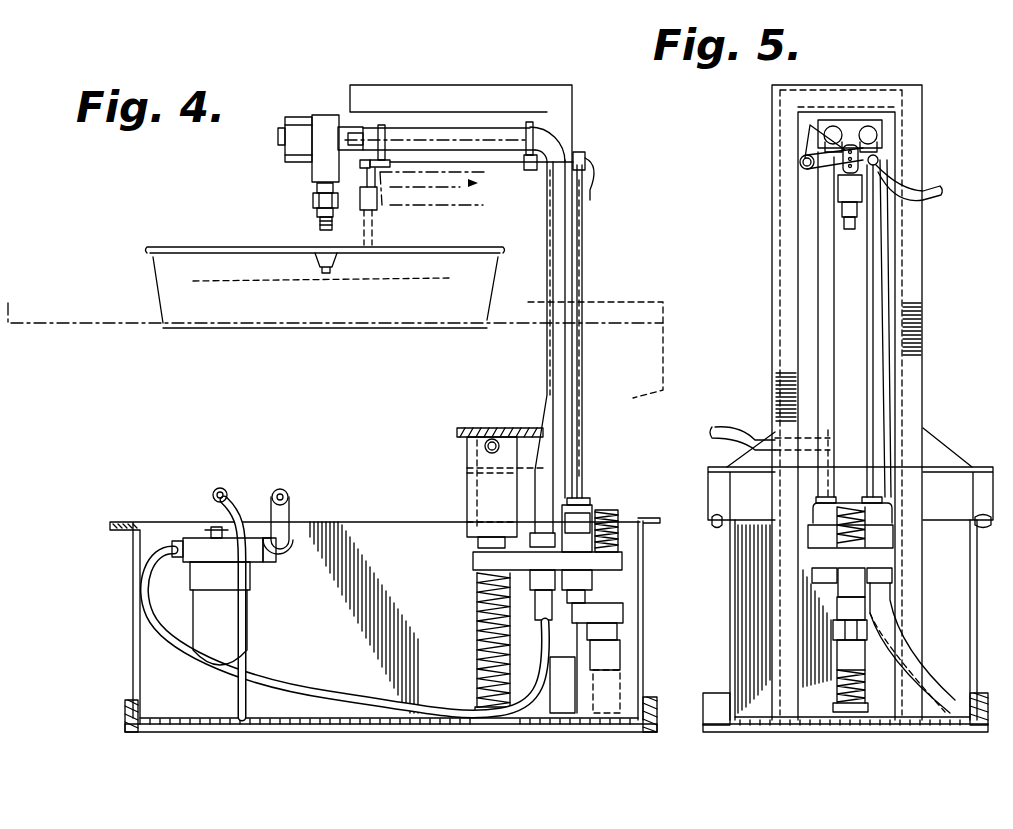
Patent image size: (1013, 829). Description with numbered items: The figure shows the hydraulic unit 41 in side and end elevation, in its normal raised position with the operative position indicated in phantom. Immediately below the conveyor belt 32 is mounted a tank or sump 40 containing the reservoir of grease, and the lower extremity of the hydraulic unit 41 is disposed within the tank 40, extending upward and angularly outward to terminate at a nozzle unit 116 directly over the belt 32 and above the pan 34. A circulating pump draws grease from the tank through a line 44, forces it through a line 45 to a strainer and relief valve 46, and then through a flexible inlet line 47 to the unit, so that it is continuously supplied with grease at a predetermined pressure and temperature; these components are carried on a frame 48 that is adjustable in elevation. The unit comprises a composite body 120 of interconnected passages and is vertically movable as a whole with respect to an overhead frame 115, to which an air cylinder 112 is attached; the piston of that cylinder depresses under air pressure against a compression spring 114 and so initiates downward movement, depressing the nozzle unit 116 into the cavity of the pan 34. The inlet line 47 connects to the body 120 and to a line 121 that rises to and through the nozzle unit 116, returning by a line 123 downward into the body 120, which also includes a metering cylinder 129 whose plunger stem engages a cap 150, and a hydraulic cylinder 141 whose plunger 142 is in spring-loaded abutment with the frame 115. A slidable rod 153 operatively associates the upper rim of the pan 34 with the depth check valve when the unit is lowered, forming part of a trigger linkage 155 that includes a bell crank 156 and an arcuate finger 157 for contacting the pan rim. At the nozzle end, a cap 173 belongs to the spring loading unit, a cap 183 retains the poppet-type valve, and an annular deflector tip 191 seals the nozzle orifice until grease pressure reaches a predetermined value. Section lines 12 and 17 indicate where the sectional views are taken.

In FIG. 4, the section line 12- 12 is at (477, 454).
In FIG. 4, the section line 17- 17 is at (285, 140).
In FIG. 4, the conveyor belt 32 is at (282, 330).
In FIG. 4, the pan 34 is at (203, 215).
In FIG. 4, the tank or sump 40 is at (133, 632).
In FIG. 5, the tank or sump 40 is at (732, 640).
In FIG. 4, the hydraulic unit 41 is at (632, 549).
In FIG. 4, the line 44 is at (213, 495).
In FIG. 4, the line 45 is at (287, 512).
In FIG. 4, the strainer and relief valve 46 is at (247, 620).
In FIG. 4, the flexible inlet line 47 is at (327, 690).
In FIG. 5, the flexible inlet line 47 is at (890, 652).
In FIG. 4, the frame 48 is at (123, 703).
In FIG. 4, the air cylinder 112 is at (465, 505).
In FIG. 4, the compression spring 114 is at (483, 670).
In FIG. 5, the compression spring 114 is at (837, 690).
In FIG. 4, the overhead frame 115 is at (573, 134).
In FIG. 5, the overhead frame 115 is at (917, 248).
In FIG. 4, the nozzle unit 116 is at (326, 118).
In FIG. 4, the composite body 120 is at (618, 566).
In FIG. 5, the composite body 120 is at (863, 558).
In FIG. 4, the line 121 is at (552, 380).
In FIG. 5, the line 121 is at (890, 427).
In FIG. 5, the line 123 is at (818, 383).
In FIG. 4, the metering cylinder 129 is at (623, 616).
In FIG. 4, the hydraulic cylinder 141 is at (482, 640).
In FIG. 4, the plunger 142 is at (480, 687).
In FIG. 5, the cap 150 is at (860, 653).
In FIG. 4, the slidable rod 153 is at (583, 278).
In FIG. 5, the slidable rod 153 is at (877, 308).
In FIG. 4, the trigger linkage 155 is at (478, 183).
In FIG. 5, the trigger linkage 155 is at (785, 167).
In FIG. 4, the bell crank 156 is at (338, 165).
In FIG. 5, the bell crank 156 is at (815, 168).
In FIG. 4, the arcuate finger 157 is at (370, 212).
In FIG. 5, the arcuate finger 157 is at (940, 188).
In FIG. 4, the cap 173 is at (282, 157).
In FIG. 4, the cap 183 is at (313, 202).
In FIG. 4, the annular deflector tip 191 is at (315, 227).